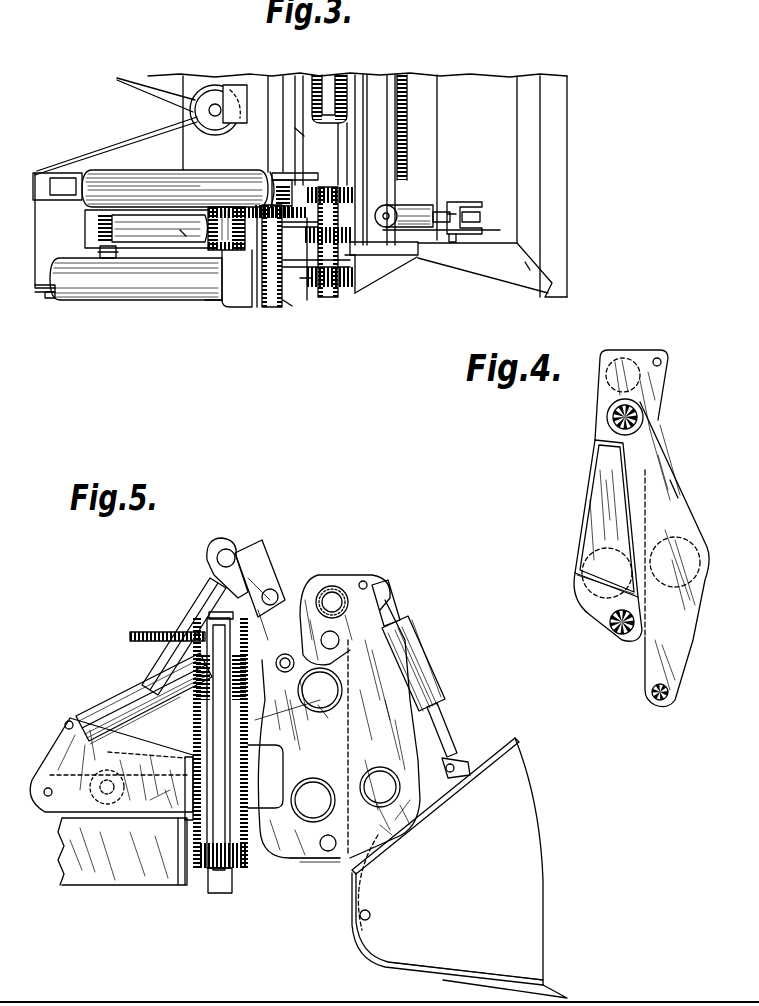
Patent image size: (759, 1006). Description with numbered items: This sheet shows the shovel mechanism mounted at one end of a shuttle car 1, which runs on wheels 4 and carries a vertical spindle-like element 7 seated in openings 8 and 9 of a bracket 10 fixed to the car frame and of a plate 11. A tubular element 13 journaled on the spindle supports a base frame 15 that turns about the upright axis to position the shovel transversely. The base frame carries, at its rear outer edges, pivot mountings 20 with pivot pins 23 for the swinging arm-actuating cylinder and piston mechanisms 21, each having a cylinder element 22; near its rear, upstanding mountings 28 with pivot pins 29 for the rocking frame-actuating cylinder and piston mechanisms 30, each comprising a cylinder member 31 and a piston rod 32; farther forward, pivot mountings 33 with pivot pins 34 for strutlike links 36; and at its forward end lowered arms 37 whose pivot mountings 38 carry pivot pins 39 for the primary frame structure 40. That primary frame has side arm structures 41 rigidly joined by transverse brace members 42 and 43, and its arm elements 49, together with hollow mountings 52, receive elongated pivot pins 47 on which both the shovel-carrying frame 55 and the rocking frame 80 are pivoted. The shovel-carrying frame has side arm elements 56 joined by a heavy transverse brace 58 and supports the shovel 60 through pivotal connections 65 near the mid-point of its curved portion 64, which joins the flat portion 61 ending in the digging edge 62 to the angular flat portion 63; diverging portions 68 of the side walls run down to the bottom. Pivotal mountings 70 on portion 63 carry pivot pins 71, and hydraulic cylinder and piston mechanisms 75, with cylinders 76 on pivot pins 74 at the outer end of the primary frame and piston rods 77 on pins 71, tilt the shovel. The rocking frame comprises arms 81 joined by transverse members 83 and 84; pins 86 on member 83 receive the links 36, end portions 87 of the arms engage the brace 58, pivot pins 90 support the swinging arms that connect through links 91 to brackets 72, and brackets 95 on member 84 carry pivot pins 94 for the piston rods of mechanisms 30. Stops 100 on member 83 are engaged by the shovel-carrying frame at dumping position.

In FIG. 5, the shuttle car 1 is at (64, 896).
In FIG. 3, the wheels 4 is at (295, 257).
In FIG. 5, the spindle-like element 7 is at (222, 893).
In FIG. 5, the opening in bracket 8 is at (208, 884).
In FIG. 5, the opening in plate 9 is at (215, 643).
In FIG. 5, the bracket 10 is at (200, 870).
In FIG. 5, the plate 11 is at (140, 635).
In FIG. 3, the tubular element 13 is at (233, 128).
In FIG. 5, the tubular element 13 is at (193, 742).
In FIG. 3, the base frame 15 is at (41, 262).
In FIG. 5, the base frame 15 is at (166, 811).
In FIG. 3, the pivot mountings 20 is at (38, 292).
In FIG. 3, the swinging arm-actuating cylinder and piston mechanisms 21 is at (208, 308).
In FIG. 3, the cylinder element 22 is at (155, 297).
In FIG. 3, the pivot pin 23 is at (50, 300).
In FIG. 3, the upstanding mountings 28 is at (50, 182).
In FIG. 5, the upstanding mountings 28 is at (52, 756).
In FIG. 3, the pivot pins 29 is at (70, 172).
In FIG. 5, the pivot pins 29 is at (63, 724).
In FIG. 3, the rocking frame-actuating cylinder and piston mechanisms 30 is at (153, 167).
In FIG. 5, the rocking frame-actuating cylinder and piston mechanisms 30 is at (116, 699).
In FIG. 3, the cylinder member 31 is at (128, 180).
In FIG. 5, the cylinder member 31 is at (90, 714).
In FIG. 3, the piston rod 32 is at (280, 182).
In FIG. 5, the piston rod 32 is at (285, 657).
In FIG. 3, the pivot mountings 33 is at (97, 222).
In FIG. 3, the pivot pins 34 is at (106, 260).
In FIG. 5, the pivot pins 34 is at (105, 804).
In FIG. 3, the strutlike elements or links 36 is at (190, 232).
In FIG. 5, the strutlike elements or links 36 is at (160, 668).
In FIG. 5, the arms 37 is at (286, 861).
In FIG. 5, the pivot mountings 38 is at (317, 867).
In FIG. 4, the pivot pins 39 is at (620, 636).
In FIG. 5, the pivot pins 39 is at (336, 851).
In FIG. 4, the primary frame structure 40 is at (675, 400).
In FIG. 5, the primary frame structure 40 is at (360, 844).
In FIG. 4, the side arm structures 41 is at (583, 580).
In FIG. 5, the side arm structures 41 is at (296, 761).
In FIG. 4, the transverse brace member 42 is at (596, 586).
In FIG. 5, the transverse brace member 42 is at (300, 836).
In FIG. 4, the transverse brace member 43 is at (618, 360).
In FIG. 5, the transverse brace member 43 is at (345, 590).
In FIG. 3, the elongated pivot pins 47 is at (340, 252).
In FIG. 4, the elongated pivot pins 47 is at (612, 418).
In FIG. 5, the elongated pivot pins 47 is at (330, 646).
In FIG. 3, the arm elements 49 is at (347, 75).
In FIG. 4, the arm elements 49 is at (645, 352).
In FIG. 4, the hollow mountings 52 is at (595, 492).
In FIG. 3, the shovel-carrying frame 55 is at (398, 257).
In FIG. 4, the shovel-carrying frame 55 is at (694, 488).
In FIG. 5, the shovel-carrying frame 55 is at (409, 752).
In FIG. 4, the side arm elements 56 is at (672, 480).
In FIG. 5, the side arm elements 56 is at (392, 829).
In FIG. 3, the transverse brace 58 is at (407, 182).
In FIG. 4, the transverse brace 58 is at (692, 560).
In FIG. 5, the transverse brace 58 is at (415, 814).
In FIG. 3, the shovel 60 is at (494, 281).
In FIG. 5, the shovel 60 is at (536, 803).
In FIG. 3, the flat portion 61 is at (538, 244).
In FIG. 5, the flat portion 61 is at (528, 979).
In FIG. 3, the digging edge 62 is at (570, 196).
In FIG. 5, the digging edge 62 is at (570, 997).
In FIG. 3, the flat portion 63 is at (503, 150).
In FIG. 5, the flat portion 63 is at (512, 741).
In FIG. 5, the curved portion 64 is at (361, 951).
In FIG. 4, the pivotal connections 65 is at (664, 700).
In FIG. 5, the pivotal connections 65 is at (368, 882).
In FIG. 3, the diverging portions 68 is at (526, 264).
In FIG. 3, the pivotal mountings 70 is at (478, 222).
In FIG. 5, the pivotal mountings 70 is at (460, 766).
In FIG. 3, the pivot pins 71 is at (453, 242).
In FIG. 5, the pivot pins 71 is at (446, 772).
In FIG. 3, the brackets 72 is at (393, 289).
In FIG. 5, the pivot pins 74 is at (368, 584).
In FIG. 3, the hydraulic cylinder and piston mechanisms 75 is at (410, 204).
In FIG. 5, the hydraulic cylinder and piston mechanisms 75 is at (406, 627).
In FIG. 3, the cylinders 76 is at (418, 206).
In FIG. 5, the cylinders 76 is at (418, 676).
In FIG. 3, the piston rods 77 is at (448, 211).
In FIG. 5, the piston rods 77 is at (432, 729).
In FIG. 3, the rocking frame 80 is at (241, 314).
In FIG. 5, the rocking frame 80 is at (245, 543).
In FIG. 5, the arms 81 is at (302, 725).
In FIG. 3, the transverse member 83 is at (273, 290).
In FIG. 5, the transverse member 83 is at (272, 588).
In FIG. 3, the transverse member 84 is at (305, 128).
In FIG. 5, the transverse member 84 is at (322, 713).
In FIG. 3, the pins 86 is at (224, 252).
In FIG. 5, the pins 86 is at (238, 548).
In FIG. 5, the portions 87 is at (372, 790).
In FIG. 3, the pivot pins 90 is at (286, 305).
In FIG. 5, the pivot pins 90 is at (275, 612).
In FIG. 3, the links 91 is at (308, 282).
In FIG. 5, the pivot pins 94 is at (335, 585).
In FIG. 3, the brackets 95 is at (318, 176).
In FIG. 5, the brackets 95 is at (300, 670).
In FIG. 5, the stops 100 is at (265, 546).